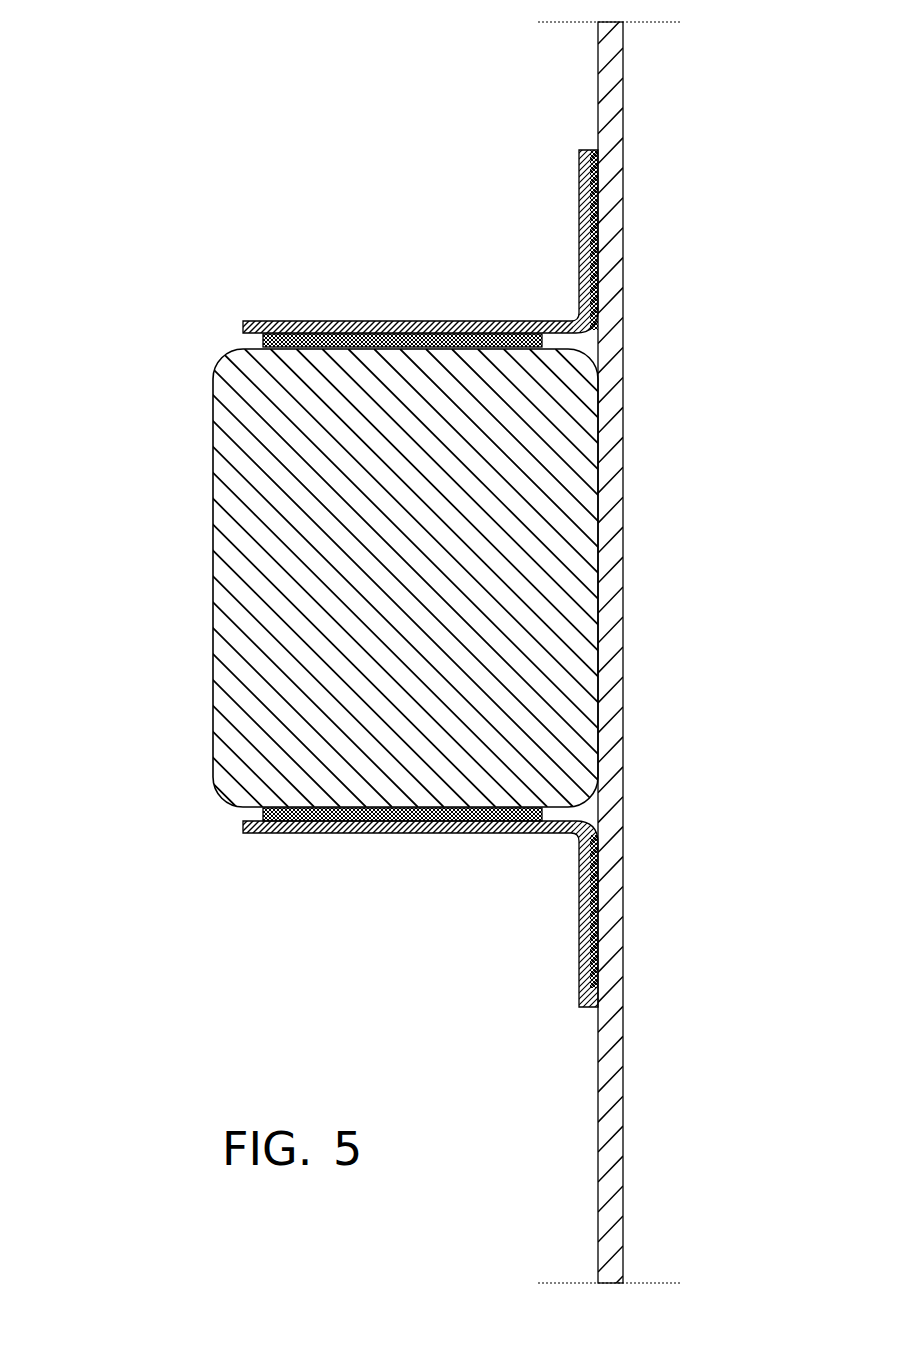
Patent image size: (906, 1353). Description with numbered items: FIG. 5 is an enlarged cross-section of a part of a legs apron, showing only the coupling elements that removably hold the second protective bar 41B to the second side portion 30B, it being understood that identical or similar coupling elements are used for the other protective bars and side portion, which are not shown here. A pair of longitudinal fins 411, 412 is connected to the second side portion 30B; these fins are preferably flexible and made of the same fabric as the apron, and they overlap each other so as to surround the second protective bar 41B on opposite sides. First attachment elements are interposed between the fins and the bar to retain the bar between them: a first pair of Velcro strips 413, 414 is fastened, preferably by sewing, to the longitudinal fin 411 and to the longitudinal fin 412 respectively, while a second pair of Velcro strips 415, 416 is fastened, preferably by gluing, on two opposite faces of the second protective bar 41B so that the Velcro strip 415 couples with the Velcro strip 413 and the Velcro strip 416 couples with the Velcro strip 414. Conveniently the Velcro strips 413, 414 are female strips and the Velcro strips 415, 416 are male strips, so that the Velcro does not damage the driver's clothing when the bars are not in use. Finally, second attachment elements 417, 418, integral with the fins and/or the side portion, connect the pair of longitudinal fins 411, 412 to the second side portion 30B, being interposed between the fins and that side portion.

The second side portion 30B is at (624, 170).
The second protective bar 41B is at (213, 515).
The longitudinal fin 411 is at (425, 243).
The longitudinal fin 412 is at (430, 913).
The Velcro strip 413 is at (250, 337).
The Velcro strip 414 is at (260, 820).
The Velcro strip 415 is at (261, 341).
The Velcro strip 416 is at (262, 813).
The second attachment element 417 is at (600, 243).
The second attachment element 418 is at (612, 920).